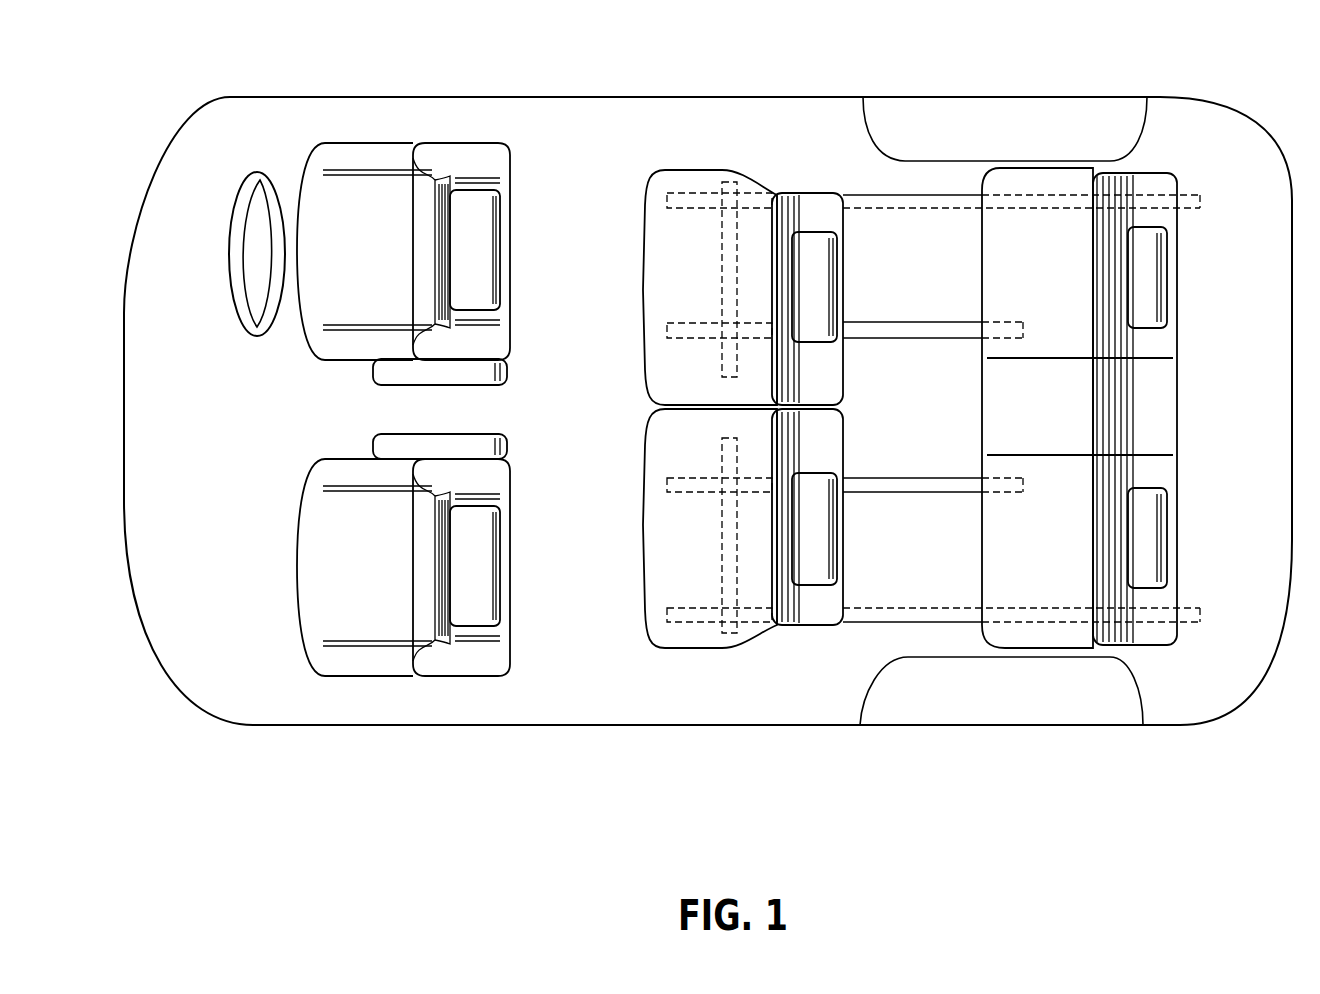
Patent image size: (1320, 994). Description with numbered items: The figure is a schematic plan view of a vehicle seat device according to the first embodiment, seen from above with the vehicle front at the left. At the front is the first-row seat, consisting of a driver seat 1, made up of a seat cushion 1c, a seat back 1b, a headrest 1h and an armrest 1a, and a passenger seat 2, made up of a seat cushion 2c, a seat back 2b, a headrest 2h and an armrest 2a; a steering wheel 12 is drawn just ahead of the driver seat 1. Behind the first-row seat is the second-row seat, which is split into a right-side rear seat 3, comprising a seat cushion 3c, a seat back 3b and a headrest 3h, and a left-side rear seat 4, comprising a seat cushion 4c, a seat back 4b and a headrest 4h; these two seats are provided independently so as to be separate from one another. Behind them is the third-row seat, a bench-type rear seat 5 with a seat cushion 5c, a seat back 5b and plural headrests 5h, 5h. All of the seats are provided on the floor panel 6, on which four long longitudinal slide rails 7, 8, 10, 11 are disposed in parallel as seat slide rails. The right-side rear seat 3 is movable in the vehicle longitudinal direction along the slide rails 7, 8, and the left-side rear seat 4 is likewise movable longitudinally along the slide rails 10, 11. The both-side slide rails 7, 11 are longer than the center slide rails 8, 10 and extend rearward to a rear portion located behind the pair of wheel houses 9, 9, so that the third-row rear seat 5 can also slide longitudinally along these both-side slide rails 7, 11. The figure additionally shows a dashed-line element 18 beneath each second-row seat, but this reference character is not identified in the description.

The driver seat 1 is at (434, 203).
The armrest 1a is at (386, 368).
The seat back 1b is at (508, 207).
The seat cushion 1c is at (380, 273).
The headrest 1h is at (473, 245).
The passenger seat 2 is at (427, 593).
The armrest 2a is at (386, 445).
The seat back 2b is at (484, 567).
The seat cushion 2c is at (373, 567).
The headrest 2h is at (503, 566).
The right-side rear seat 3 is at (741, 218).
The seat back 3b is at (842, 234).
The seat cushion 3c is at (642, 293).
The headrest 3h is at (802, 280).
The left-side rear seat 4 is at (745, 589).
The seat back 4b is at (838, 517).
The seat cushion 4c is at (675, 535).
The headrest 4h is at (812, 550).
The rear seat 5 is at (1109, 338).
The seat back 5b is at (1177, 346).
The seat cushion 5c is at (1047, 413).
The headrest 5h is at (1142, 263).
The floor panel 6 is at (916, 426).
The longitudinal slide rail 7 is at (865, 193).
The longitudinal slide rail 8 is at (918, 322).
The wheel house 9 is at (1138, 127).
The longitudinal slide rail 10 is at (937, 492).
The longitudinal slide rail 11 is at (863, 624).
The steering wheel 12 is at (232, 257).
The seat slide rail 18 is at (720, 257).